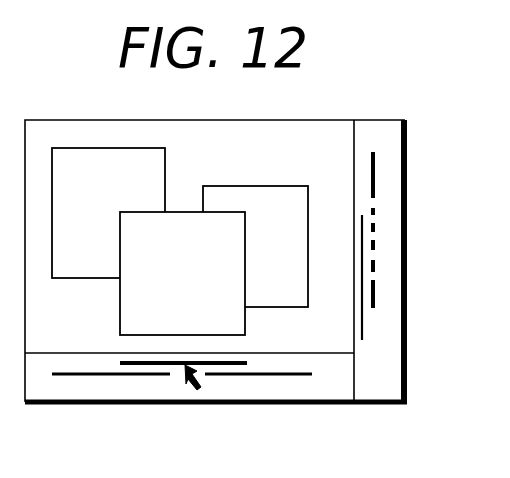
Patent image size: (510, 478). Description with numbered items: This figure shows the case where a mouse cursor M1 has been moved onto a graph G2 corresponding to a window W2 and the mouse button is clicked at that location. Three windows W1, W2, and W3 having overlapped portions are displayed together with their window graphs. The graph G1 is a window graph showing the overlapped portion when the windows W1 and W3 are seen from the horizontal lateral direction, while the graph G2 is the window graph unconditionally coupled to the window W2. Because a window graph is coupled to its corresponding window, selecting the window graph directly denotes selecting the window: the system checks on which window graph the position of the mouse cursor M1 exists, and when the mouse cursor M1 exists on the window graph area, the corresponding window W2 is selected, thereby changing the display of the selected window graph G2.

The window W1 is at (108, 213).
The window W2 is at (182, 273).
The window W3 is at (255, 246).
The graph G1 is at (372, 211).
The graph G2 is at (363, 328).
The mouse cursor M1 is at (205, 387).